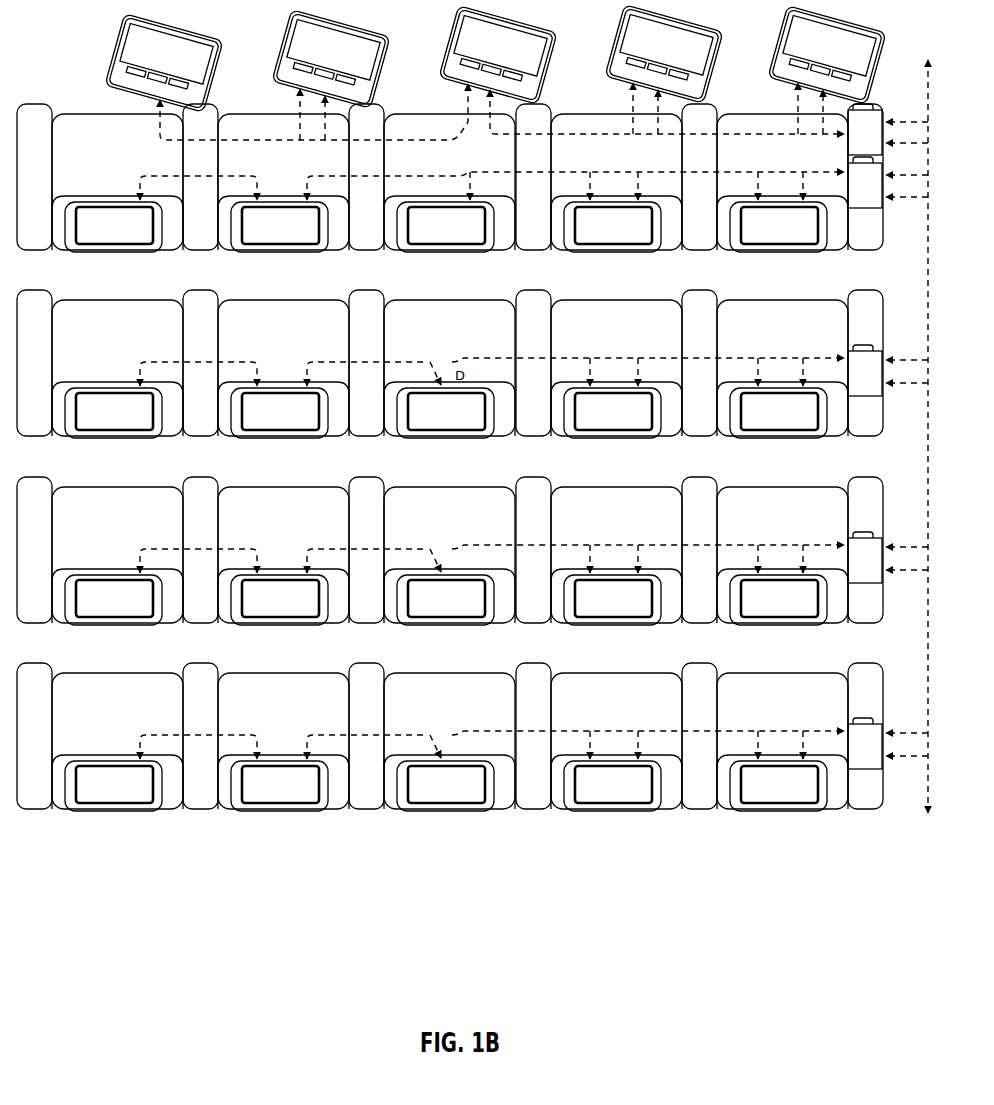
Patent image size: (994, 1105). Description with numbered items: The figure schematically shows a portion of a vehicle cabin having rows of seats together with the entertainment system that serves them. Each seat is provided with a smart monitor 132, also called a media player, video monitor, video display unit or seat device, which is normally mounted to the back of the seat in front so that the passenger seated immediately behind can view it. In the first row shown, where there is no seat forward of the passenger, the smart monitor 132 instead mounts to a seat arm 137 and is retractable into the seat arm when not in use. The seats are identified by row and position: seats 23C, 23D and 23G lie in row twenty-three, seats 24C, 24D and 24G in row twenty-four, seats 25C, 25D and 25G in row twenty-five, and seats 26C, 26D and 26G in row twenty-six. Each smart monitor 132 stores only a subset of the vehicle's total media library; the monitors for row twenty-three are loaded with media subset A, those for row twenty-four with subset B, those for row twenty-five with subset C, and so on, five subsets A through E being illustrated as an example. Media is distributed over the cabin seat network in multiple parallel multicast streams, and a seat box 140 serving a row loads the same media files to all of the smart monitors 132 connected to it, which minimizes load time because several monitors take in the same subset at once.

The smart monitor 132 is at (121, 16).
The seat arm 137 is at (221, 110).
The seat box 140 is at (881, 107).
The seat 23C is at (100, 168).
The seat 23D is at (267, 168).
The seat 23G is at (768, 166).
The seat 24C is at (100, 354).
The seat 24D is at (267, 354).
The seat 24G is at (768, 352).
The seat 25C is at (100, 541).
The seat 25D is at (267, 541).
The seat 25G is at (768, 539).
The seat 26C is at (100, 727).
The seat 26D is at (267, 727).
The seat 26G is at (768, 725).